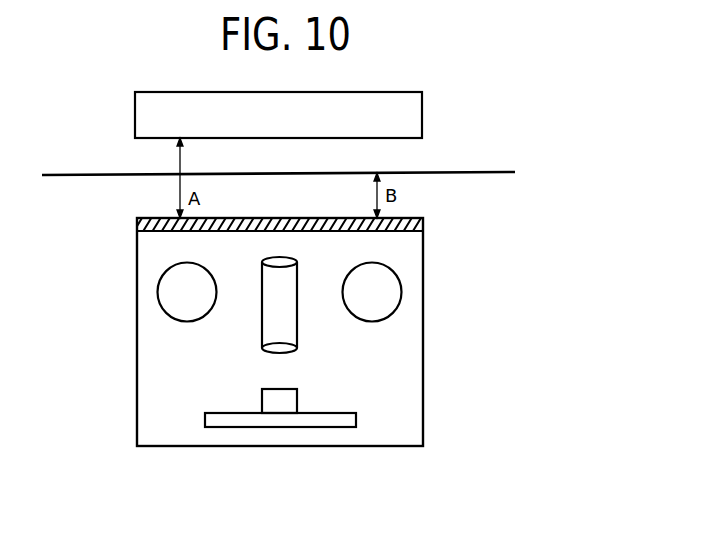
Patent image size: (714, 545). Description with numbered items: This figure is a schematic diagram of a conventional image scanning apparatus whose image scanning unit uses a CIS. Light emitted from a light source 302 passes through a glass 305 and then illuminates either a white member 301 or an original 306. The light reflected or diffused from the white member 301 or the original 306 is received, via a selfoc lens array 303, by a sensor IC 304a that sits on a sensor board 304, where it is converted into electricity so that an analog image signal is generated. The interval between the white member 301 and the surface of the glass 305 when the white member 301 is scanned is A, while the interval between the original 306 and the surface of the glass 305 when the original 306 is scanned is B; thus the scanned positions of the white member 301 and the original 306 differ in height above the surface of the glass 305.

The white member 301 is at (423, 113).
The light source 302 is at (402, 287).
The selfoc lens array 303 is at (298, 328).
The sensor board 304 is at (220, 412).
The sensor IC 304a is at (298, 402).
The glass 305 is at (415, 224).
The original 306 is at (497, 171).